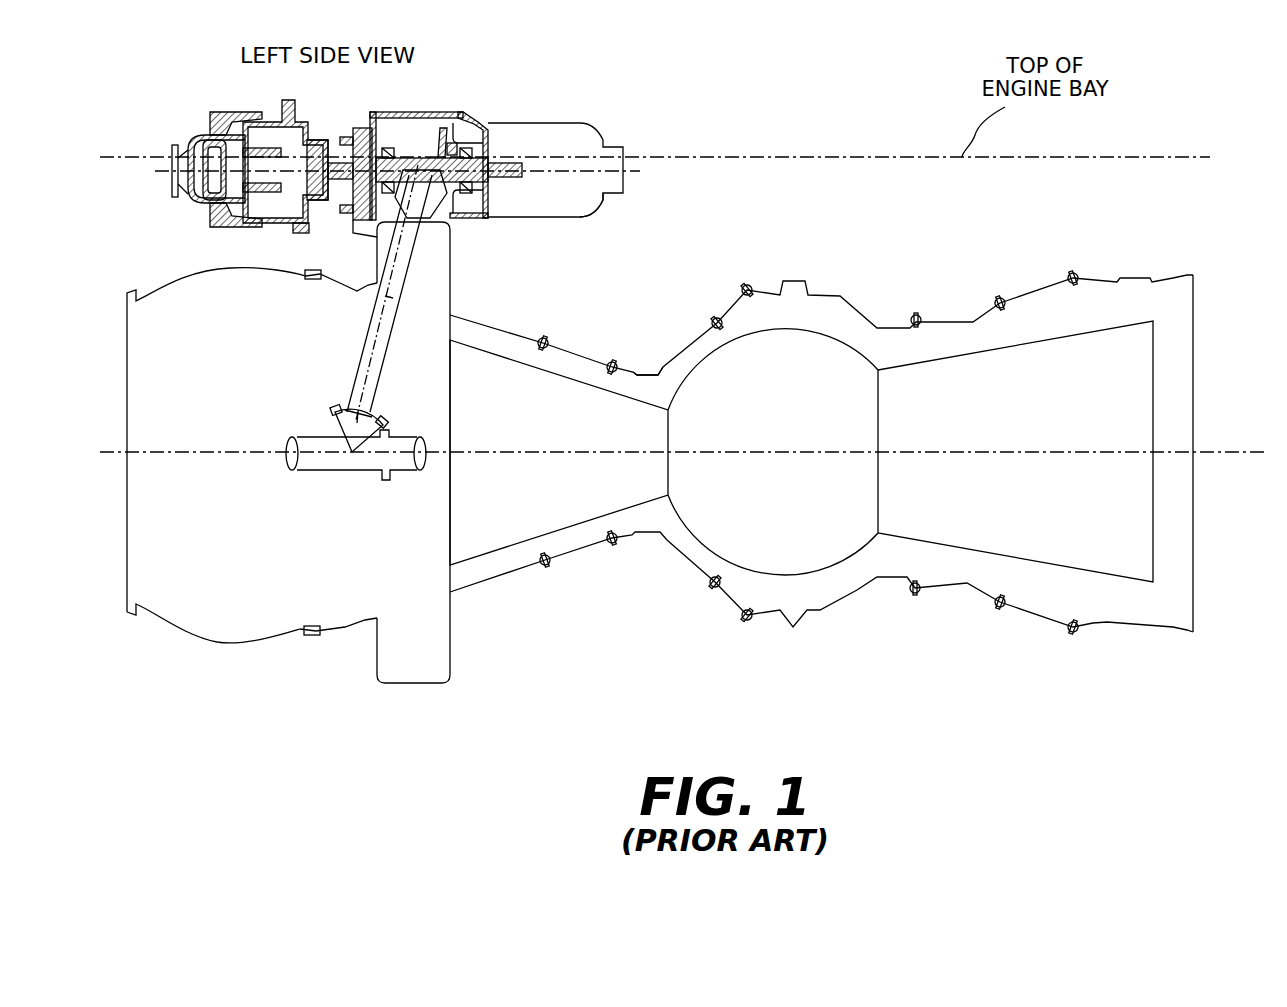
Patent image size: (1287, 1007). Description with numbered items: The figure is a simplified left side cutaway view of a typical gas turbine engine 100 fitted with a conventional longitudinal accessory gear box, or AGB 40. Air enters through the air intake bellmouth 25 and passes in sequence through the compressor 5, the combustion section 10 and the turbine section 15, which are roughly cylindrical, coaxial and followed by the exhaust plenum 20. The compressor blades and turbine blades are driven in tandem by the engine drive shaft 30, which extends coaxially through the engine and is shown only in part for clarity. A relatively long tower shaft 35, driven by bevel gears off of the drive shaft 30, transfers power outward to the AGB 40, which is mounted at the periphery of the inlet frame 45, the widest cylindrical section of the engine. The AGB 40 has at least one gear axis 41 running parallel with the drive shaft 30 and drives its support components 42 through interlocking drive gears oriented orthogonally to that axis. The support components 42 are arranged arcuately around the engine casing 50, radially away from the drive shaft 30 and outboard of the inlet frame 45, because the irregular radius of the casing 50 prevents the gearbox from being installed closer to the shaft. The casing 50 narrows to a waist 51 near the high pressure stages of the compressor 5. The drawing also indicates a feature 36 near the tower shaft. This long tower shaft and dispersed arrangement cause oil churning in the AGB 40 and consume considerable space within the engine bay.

The compressor section 5 is at (515, 433).
The combustion section 10 is at (798, 431).
The turbine section 15 is at (1045, 423).
The exhaust plenum 20 is at (1193, 328).
The air intake bellmouth 25 is at (150, 295).
The engine drive shaft 30 is at (323, 475).
The tower shaft 35 is at (377, 328).
The direction of rotation/drive 36 is at (410, 299).
The auxiliary gear box (AGB) 40 is at (450, 112).
The gear axis 41 is at (587, 172).
The support components 42 is at (238, 114).
The inlet frame 45 is at (450, 247).
The engine casing 50 is at (856, 306).
The waist 51 is at (647, 365).
The gas turbine engine 100 is at (1163, 145).